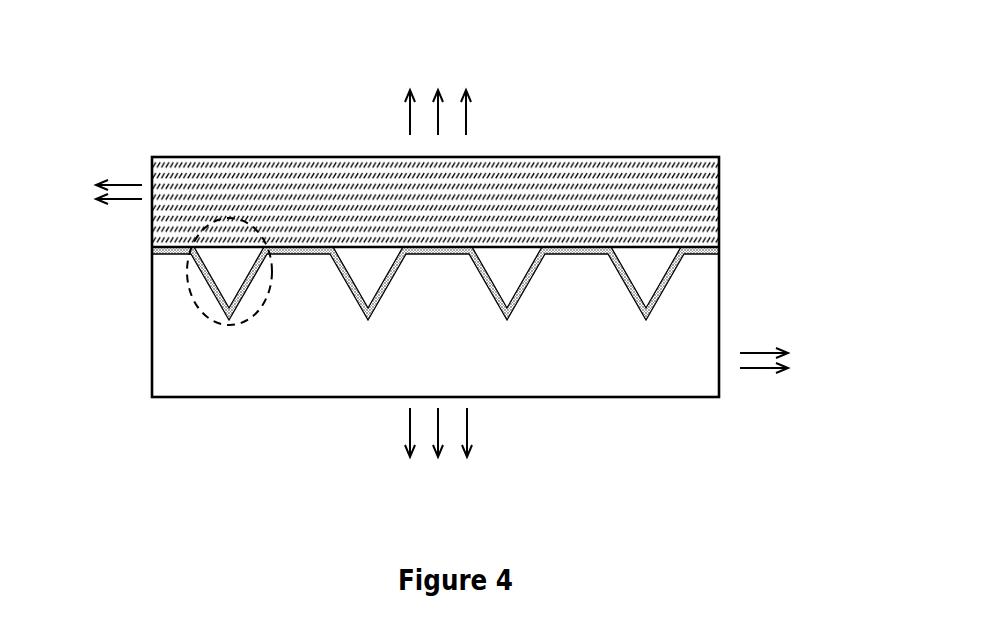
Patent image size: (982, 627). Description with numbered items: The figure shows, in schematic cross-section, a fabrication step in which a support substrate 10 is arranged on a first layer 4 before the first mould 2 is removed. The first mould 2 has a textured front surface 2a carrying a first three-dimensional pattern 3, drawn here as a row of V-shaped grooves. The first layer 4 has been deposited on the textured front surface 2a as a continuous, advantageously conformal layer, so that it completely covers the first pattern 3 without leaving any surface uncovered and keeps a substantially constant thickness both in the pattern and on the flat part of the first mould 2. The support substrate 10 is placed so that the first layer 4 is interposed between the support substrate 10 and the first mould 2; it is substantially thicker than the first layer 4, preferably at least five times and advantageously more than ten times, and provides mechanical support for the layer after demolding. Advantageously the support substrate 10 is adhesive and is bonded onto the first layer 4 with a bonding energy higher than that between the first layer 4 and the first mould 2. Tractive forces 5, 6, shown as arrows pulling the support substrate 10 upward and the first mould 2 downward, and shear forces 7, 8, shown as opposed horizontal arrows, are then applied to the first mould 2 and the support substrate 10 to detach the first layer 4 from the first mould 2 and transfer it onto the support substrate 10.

The first mould 2 is at (187, 360).
The textured front surface 2a is at (706, 254).
The first 3D pattern 3 is at (190, 288).
The first layer 4 is at (675, 272).
The tractive force 5 is at (342, 113).
The tractive force 6 is at (526, 437).
The shear force 7 is at (776, 331).
The shear force 8 is at (110, 153).
The support substrate 10 is at (707, 178).